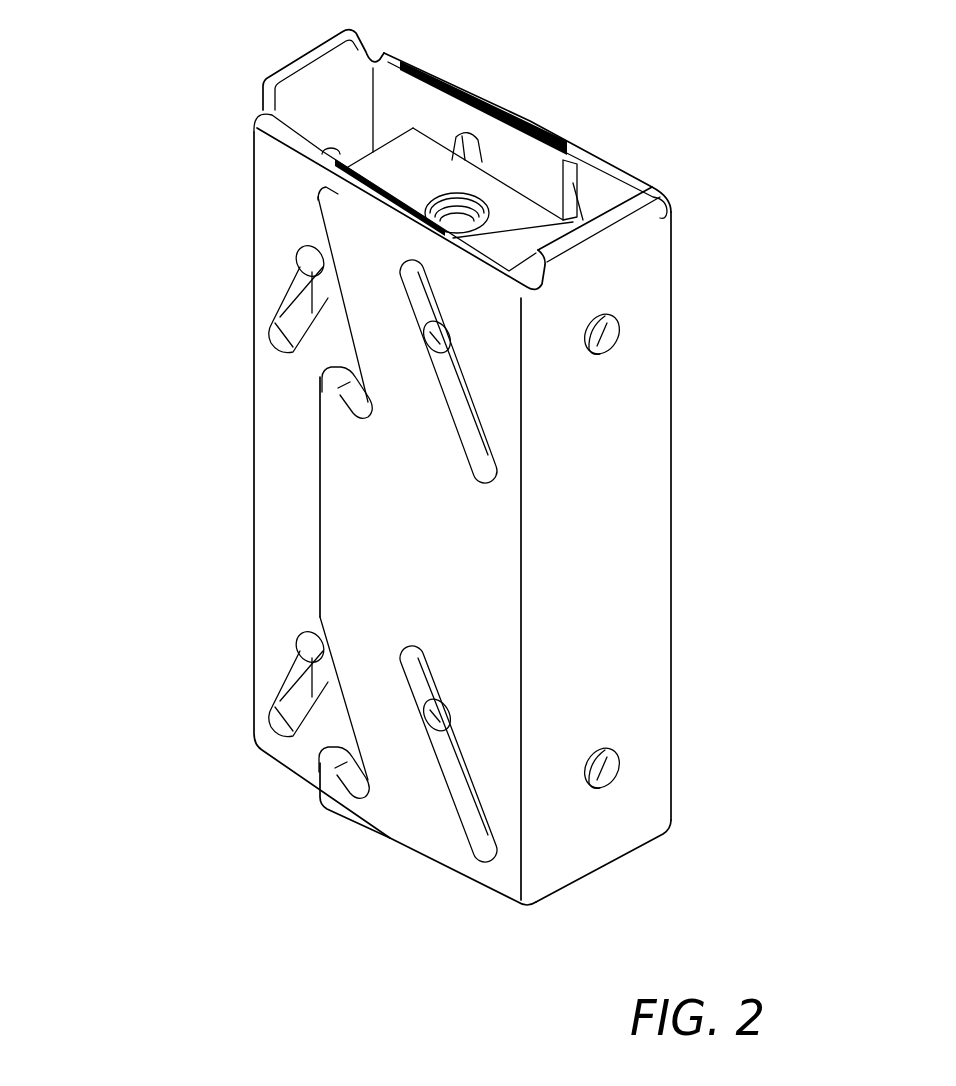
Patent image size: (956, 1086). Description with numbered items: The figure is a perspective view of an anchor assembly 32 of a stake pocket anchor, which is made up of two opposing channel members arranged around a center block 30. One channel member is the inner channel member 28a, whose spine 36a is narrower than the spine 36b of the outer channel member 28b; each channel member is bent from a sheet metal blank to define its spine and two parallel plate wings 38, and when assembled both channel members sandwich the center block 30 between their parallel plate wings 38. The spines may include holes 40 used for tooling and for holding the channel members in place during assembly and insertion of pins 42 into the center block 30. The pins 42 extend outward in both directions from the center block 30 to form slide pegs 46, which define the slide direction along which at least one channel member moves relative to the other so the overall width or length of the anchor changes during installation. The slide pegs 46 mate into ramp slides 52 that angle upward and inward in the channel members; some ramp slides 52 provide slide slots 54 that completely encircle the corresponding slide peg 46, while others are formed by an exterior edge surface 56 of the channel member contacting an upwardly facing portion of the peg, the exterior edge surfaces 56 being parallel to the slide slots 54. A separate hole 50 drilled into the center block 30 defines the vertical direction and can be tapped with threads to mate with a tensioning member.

The anchor assembly 32 is at (672, 105).
The center block 30 is at (527, 227).
The hole 50 is at (483, 197).
The inner channel member 28a is at (265, 210).
The outer channel member 28b is at (642, 507).
The spine 36a is at (330, 82).
The spine 36b is at (630, 587).
The parallel plate wings 38 is at (292, 513).
The holes 40 is at (336, 152).
The pins 42 is at (290, 260).
The slide pegs 46 is at (400, 285).
The ramp slides 52 is at (493, 465).
The slide slots 54 is at (463, 420).
The exterior edge surface 56 is at (348, 350).